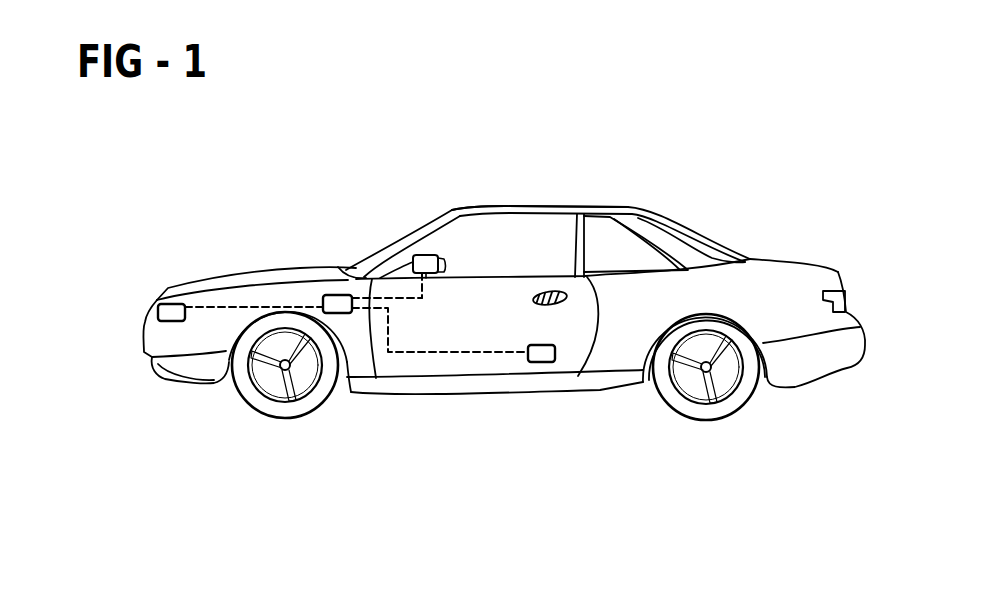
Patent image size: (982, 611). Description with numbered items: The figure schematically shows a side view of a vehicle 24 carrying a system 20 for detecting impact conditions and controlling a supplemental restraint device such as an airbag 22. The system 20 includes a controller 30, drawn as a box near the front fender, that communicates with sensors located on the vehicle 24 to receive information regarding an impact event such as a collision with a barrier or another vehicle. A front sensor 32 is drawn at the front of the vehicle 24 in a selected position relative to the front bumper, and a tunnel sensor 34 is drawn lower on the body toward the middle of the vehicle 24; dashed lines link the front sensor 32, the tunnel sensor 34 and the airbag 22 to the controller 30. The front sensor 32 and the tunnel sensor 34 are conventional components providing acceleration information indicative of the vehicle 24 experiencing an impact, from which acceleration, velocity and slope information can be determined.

The system 20 is at (155, 184).
The airbag 22 is at (423, 264).
The vehicle 24 is at (567, 204).
The controller 30 is at (337, 303).
The front sensors 32 is at (170, 310).
The tunnel sensor 34 is at (548, 362).